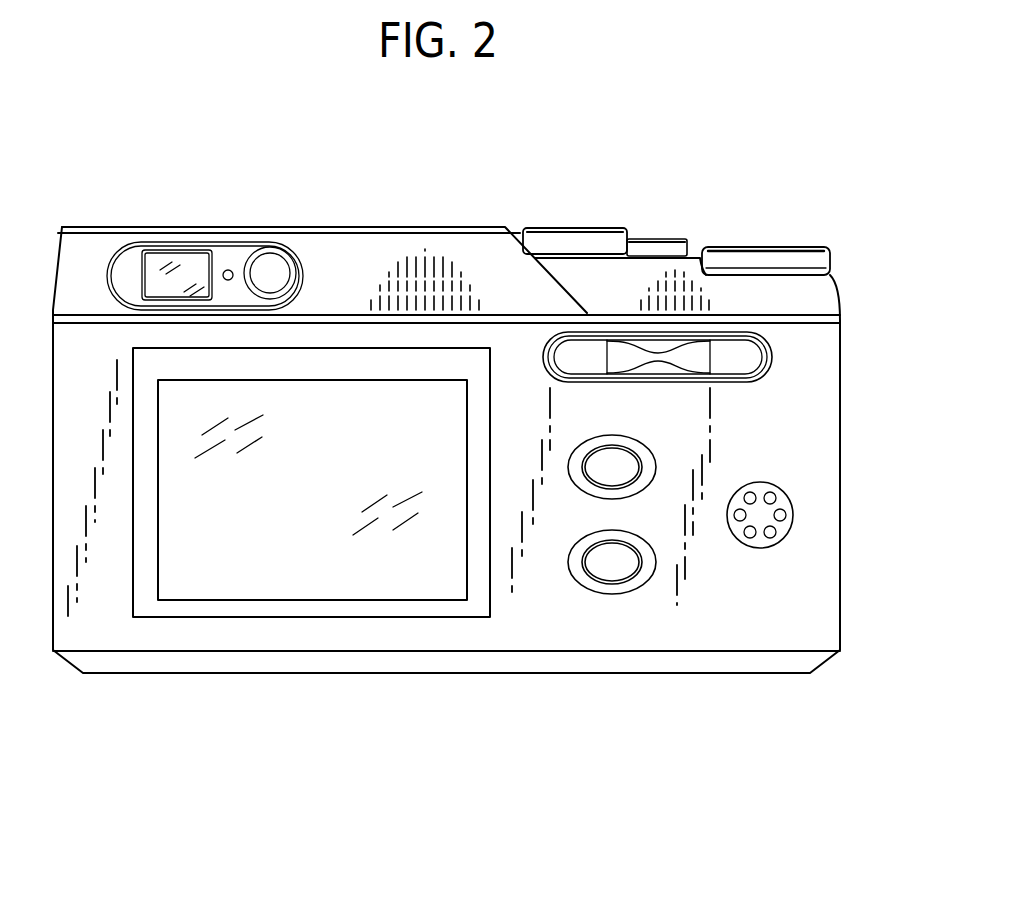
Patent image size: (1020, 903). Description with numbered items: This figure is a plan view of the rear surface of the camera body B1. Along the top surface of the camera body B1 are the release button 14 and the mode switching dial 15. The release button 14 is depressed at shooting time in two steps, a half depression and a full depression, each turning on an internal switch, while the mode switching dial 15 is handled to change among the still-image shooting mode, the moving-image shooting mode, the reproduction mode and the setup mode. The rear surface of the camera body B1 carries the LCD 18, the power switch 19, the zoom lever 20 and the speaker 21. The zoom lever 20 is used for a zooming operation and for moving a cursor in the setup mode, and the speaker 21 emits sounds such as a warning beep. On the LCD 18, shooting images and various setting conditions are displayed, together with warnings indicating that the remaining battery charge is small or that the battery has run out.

The release button 14 is at (759, 247).
The mode switching dial 15 is at (575, 228).
The LCD 18 is at (314, 557).
The power switch 19 is at (268, 272).
The zoom lever 20 is at (745, 358).
The speaker 21 is at (785, 502).
The camera body B1 is at (663, 675).